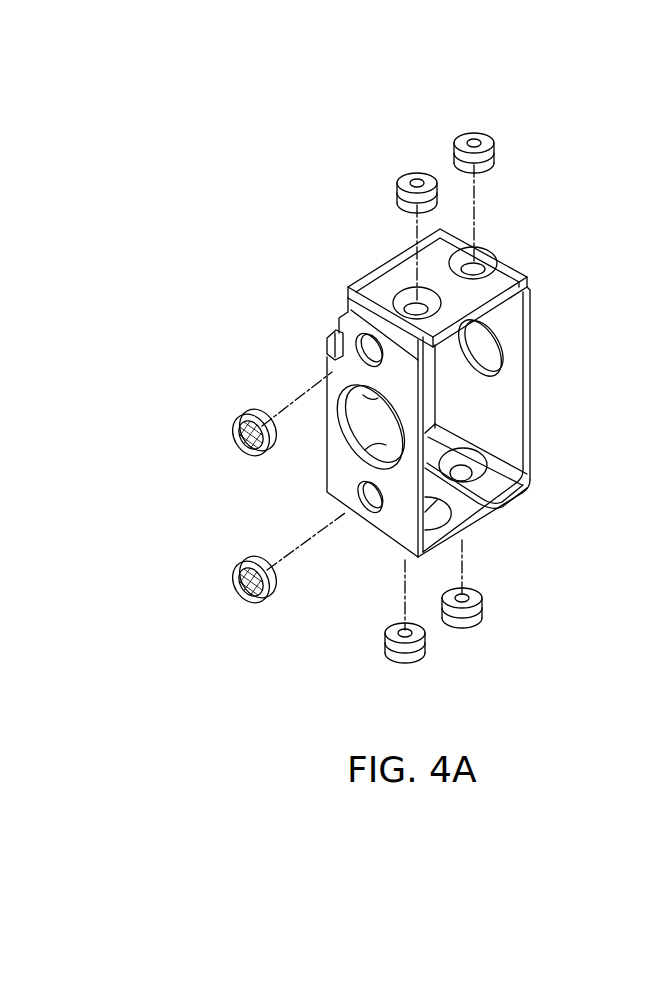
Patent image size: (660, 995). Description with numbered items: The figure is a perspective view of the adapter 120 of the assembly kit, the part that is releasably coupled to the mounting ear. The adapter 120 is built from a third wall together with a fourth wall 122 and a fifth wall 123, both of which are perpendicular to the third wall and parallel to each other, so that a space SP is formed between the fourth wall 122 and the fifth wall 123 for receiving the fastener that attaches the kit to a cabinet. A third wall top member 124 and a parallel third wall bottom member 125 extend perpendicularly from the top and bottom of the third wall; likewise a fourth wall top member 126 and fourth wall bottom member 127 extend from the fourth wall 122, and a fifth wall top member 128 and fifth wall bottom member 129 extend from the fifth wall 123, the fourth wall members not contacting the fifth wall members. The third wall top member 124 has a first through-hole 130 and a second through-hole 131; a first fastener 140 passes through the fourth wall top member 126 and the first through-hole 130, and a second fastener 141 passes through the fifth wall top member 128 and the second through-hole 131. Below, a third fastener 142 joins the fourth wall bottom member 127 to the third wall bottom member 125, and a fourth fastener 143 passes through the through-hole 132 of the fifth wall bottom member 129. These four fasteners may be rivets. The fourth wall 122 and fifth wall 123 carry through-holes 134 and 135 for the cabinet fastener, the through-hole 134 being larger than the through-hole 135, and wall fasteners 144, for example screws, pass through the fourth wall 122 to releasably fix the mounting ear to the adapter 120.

The adapter 120 is at (530, 116).
The fourth wall 122 is at (388, 515).
The fifth wall 123 is at (505, 436).
The third wall top member 124 is at (386, 280).
The third wall bottom member 125 is at (500, 509).
The fourth wall top member 126 is at (490, 430).
The fourth wall bottom member 127 is at (452, 527).
The fifth wall top member 128 is at (526, 294).
The fifth wall bottom member 129 is at (503, 491).
The first through-hole 130 is at (326, 339).
The second through-hole 131 is at (482, 247).
The through-hole 132 is at (488, 463).
The through-hole 134 is at (347, 433).
The through-hole 135 is at (465, 358).
The space SP is at (500, 397).
The first fastener 140 is at (413, 165).
The second fastener 141 is at (476, 125).
The third fastener 142 is at (400, 660).
The fourth fastener 143 is at (460, 625).
The wall fastener 144 is at (233, 438).